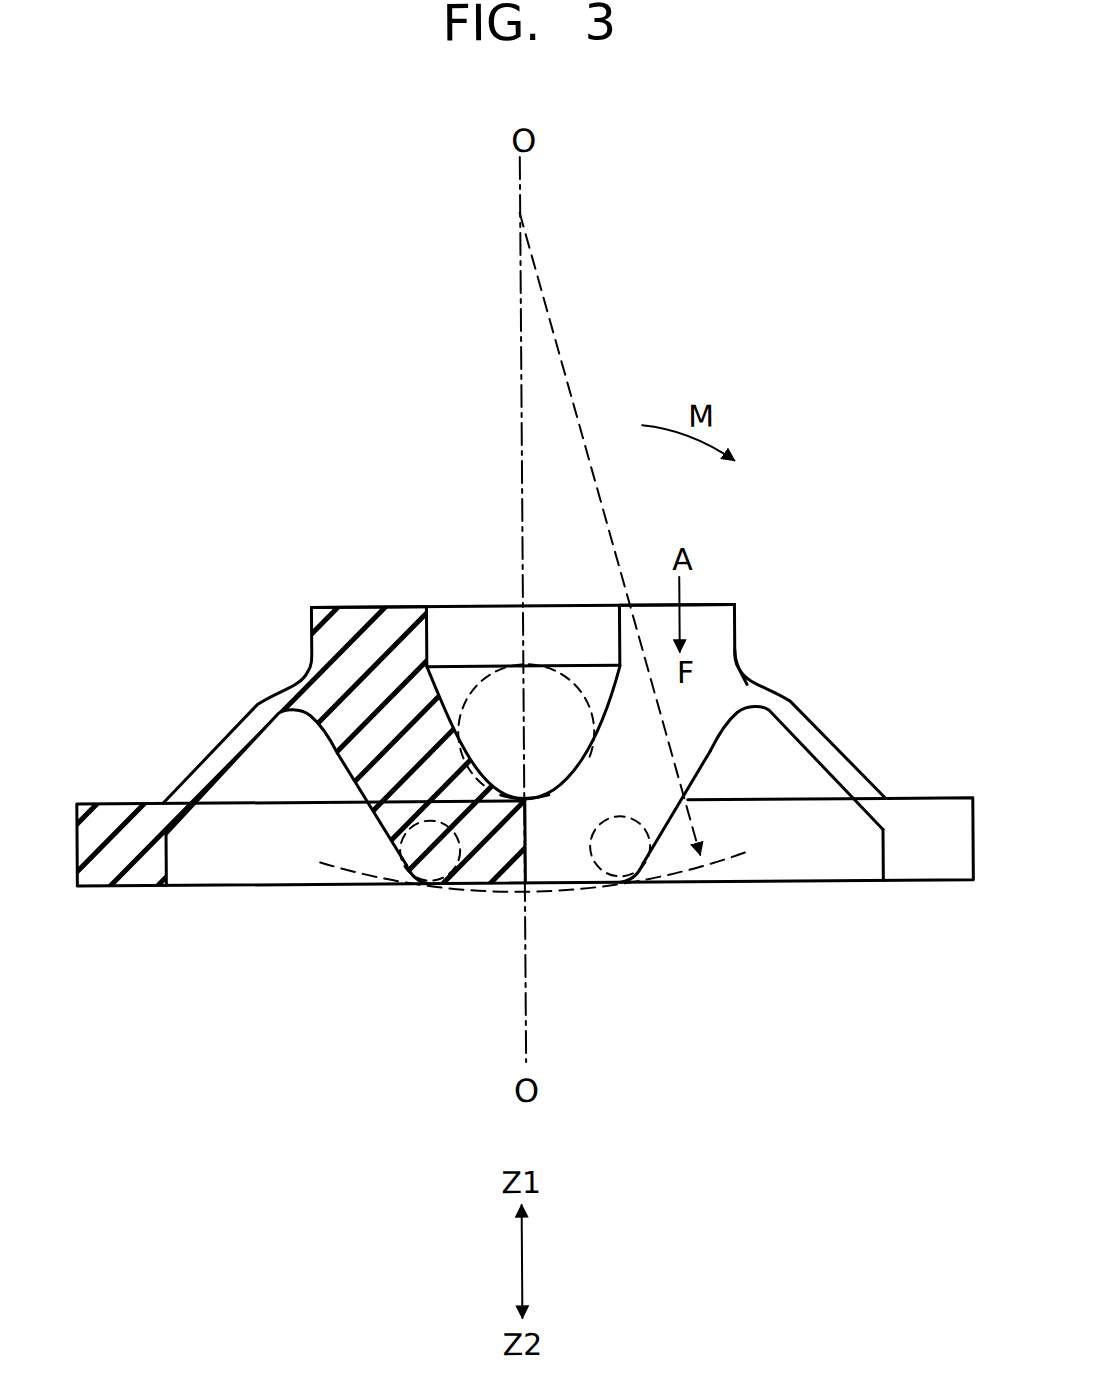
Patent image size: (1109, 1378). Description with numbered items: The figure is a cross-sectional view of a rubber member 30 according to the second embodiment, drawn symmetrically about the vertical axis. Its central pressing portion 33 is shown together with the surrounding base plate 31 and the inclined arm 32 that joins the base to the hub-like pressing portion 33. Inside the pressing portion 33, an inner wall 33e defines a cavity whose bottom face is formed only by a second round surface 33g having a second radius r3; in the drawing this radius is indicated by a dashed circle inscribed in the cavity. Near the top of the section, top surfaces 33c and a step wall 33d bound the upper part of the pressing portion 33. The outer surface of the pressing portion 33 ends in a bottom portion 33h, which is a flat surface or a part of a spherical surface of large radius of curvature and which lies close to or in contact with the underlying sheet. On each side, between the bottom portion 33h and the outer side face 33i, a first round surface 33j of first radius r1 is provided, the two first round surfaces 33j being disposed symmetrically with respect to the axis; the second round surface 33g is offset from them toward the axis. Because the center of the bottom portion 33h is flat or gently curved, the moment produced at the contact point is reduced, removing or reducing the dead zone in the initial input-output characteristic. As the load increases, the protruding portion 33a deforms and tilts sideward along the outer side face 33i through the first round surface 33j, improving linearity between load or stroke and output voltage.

The rubber member 30 is at (796, 419).
The base plate 31 is at (929, 873).
The conical arm portion 32 is at (838, 766).
The pressing portion 33 is at (266, 896).
The protruding portion 33a is at (353, 747).
The top surface of hub 33c is at (362, 605).
The step wall 33d is at (612, 647).
The inner wall 33e is at (610, 708).
The second round surface 33g is at (537, 785).
The bottom portion 33h is at (527, 880).
The outer side face 33i is at (698, 775).
The first round surfaces 33j is at (403, 880).
The first radius r1 is at (416, 872).
The second radius r3 is at (521, 732).